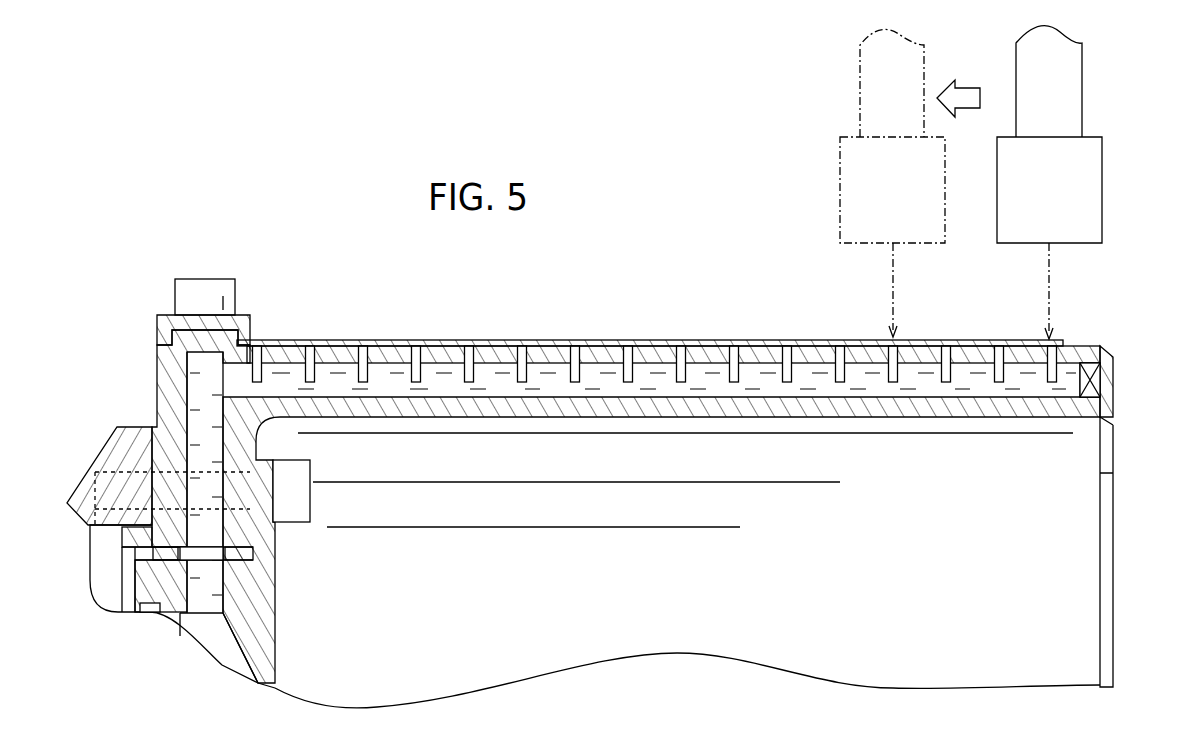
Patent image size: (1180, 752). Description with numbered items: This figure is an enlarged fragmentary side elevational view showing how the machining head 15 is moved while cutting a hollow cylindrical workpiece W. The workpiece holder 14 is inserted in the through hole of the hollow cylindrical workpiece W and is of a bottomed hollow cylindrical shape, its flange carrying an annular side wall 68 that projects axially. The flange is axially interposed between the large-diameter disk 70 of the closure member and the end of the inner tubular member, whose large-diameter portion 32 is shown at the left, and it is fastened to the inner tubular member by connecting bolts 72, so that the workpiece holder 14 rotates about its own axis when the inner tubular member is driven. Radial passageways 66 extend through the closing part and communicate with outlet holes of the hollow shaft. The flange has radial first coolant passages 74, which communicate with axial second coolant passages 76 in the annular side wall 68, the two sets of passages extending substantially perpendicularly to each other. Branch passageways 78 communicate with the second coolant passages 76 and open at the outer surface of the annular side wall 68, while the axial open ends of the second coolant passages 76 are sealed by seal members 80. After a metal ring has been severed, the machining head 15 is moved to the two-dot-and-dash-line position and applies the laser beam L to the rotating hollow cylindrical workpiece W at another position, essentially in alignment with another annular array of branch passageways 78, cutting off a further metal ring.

The workpiece holder 14 is at (1074, 510).
The machining head 15 is at (858, 200).
The large-diameter portion 32 is at (105, 497).
The passageways 66 is at (197, 600).
The annular side wall 68 is at (1075, 410).
The large-diameter disk 70 is at (260, 600).
The connecting bolts 72 is at (298, 495).
The first coolant passages 74 is at (184, 378).
The second coolant passages 76 is at (445, 360).
The branch passageways 78 is at (362, 360).
The seal members 80 is at (1105, 380).
The hollow cylindrical workpiece W is at (651, 341).
The laser beam L is at (897, 277).